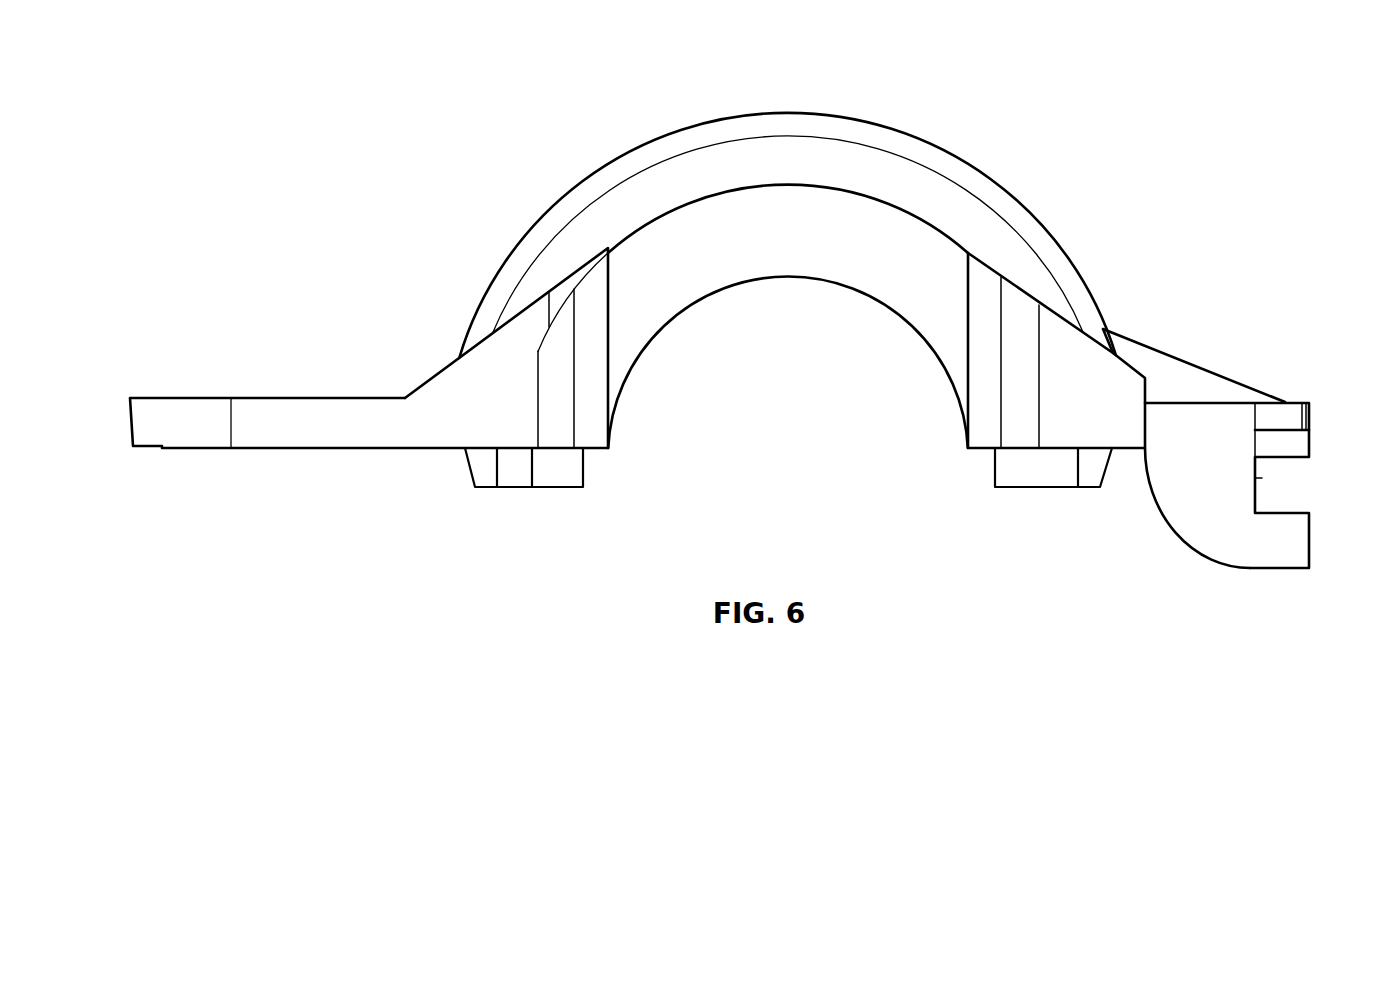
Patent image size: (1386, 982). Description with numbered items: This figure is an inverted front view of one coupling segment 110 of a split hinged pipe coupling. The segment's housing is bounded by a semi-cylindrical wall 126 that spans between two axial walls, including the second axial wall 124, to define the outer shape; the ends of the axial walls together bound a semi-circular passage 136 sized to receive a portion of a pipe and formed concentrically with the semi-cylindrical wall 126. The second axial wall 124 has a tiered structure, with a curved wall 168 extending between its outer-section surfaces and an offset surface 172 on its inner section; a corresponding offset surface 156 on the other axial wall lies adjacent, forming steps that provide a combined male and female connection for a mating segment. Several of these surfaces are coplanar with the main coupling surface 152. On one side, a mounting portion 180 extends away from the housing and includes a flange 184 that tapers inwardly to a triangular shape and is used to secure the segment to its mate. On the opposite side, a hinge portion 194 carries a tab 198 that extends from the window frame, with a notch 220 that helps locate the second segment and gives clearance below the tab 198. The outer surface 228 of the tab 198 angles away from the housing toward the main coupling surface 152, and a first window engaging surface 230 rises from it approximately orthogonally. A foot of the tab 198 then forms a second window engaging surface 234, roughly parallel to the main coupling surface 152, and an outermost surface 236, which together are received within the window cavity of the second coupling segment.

The coupling segment 110 is at (734, 325).
The second axial wall 124 is at (887, 280).
The semi-cylindrical wall 126 is at (598, 170).
The passage 136 is at (789, 378).
The main coupling surface 152 is at (400, 452).
The offset surface 156 is at (522, 490).
The curved wall 168 is at (713, 293).
The offset surface 172 is at (1042, 490).
The mounting portion 180 is at (349, 403).
The flange 184 is at (253, 452).
The hinge portion 194 is at (1173, 432).
The tab 198 is at (1210, 538).
The notch 220 is at (1295, 439).
The outer surface of the tab 228 is at (1153, 345).
The first window engaging surface 230 is at (1257, 478).
The second window engaging surface 234 is at (1298, 512).
The outermost surface 236 is at (1310, 533).